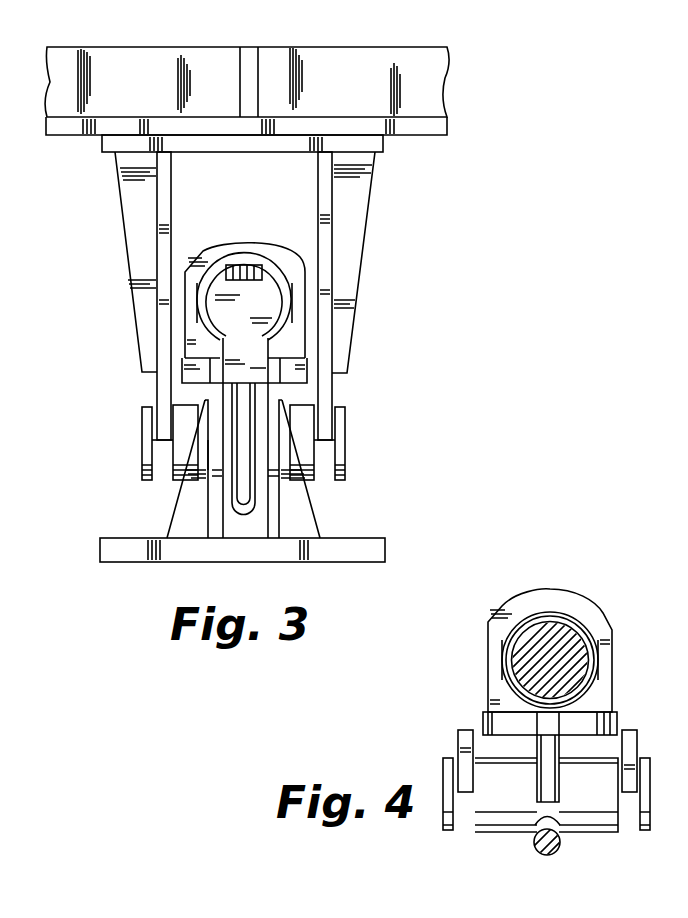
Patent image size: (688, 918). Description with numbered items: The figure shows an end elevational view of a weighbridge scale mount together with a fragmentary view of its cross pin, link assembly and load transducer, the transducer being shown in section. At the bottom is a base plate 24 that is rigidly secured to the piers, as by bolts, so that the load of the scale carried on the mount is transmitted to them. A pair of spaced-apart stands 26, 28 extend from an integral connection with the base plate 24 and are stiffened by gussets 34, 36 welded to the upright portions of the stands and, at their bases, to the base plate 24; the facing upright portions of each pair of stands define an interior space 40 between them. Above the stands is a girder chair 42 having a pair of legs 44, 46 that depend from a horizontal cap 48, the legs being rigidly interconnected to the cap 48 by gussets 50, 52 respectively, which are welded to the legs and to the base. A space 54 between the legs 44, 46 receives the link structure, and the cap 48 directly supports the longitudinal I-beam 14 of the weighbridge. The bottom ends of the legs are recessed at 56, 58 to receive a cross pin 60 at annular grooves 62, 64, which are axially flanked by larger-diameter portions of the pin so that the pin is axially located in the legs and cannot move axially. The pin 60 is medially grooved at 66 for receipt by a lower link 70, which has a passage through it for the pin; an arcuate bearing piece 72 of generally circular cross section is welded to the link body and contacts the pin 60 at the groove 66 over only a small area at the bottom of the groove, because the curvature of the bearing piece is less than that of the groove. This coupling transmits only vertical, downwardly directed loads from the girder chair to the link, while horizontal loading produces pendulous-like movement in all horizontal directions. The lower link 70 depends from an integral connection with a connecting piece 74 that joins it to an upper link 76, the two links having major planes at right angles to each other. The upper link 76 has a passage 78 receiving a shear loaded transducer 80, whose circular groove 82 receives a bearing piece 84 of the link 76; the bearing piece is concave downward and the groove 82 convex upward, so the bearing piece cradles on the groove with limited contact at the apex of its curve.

In FIG. 3, the longitudinal I-beam 14 is at (437, 100).
In FIG. 3, the base plate 24 is at (139, 563).
In FIG. 3, the stand 26 is at (205, 518).
In FIG. 3, the stand 28 is at (305, 522).
In FIG. 3, the gusset 34 is at (183, 497).
In FIG. 3, the gusset 36 is at (306, 500).
In FIG. 3, the interior space 40 is at (245, 460).
In FIG. 3, the girder chair 42 is at (383, 198).
In FIG. 3, the leg 44 is at (172, 191).
In FIG. 4, the leg 44 is at (458, 747).
In FIG. 3, the leg 46 is at (320, 192).
In FIG. 4, the leg 46 is at (637, 750).
In FIG. 3, the horizontal cap 48 is at (383, 150).
In FIG. 3, the gusset 50 is at (128, 222).
In FIG. 3, the gusset 52 is at (360, 235).
In FIG. 3, the space 54 is at (262, 227).
In FIG. 3, the recess 56 is at (156, 407).
In FIG. 3, the recess 58 is at (347, 409).
In FIG. 3, the cross pin 60 is at (346, 440).
In FIG. 3, the annular groove 62 is at (165, 453).
In FIG. 4, the annular groove 62 is at (462, 825).
In FIG. 3, the annular groove 64 is at (320, 463).
In FIG. 4, the annular groove 64 is at (630, 800).
In FIG. 3, the medial groove 66 is at (343, 473).
In FIG. 3, the lower link 70 is at (300, 403).
In FIG. 4, the lower link 70 is at (548, 757).
In FIG. 4, the arcuate bearing piece 72 is at (556, 852).
In FIG. 3, the connecting piece 74 is at (308, 368).
In FIG. 4, the connecting piece 74 is at (614, 720).
In FIG. 3, the upper link 76 is at (218, 256).
In FIG. 4, the upper link 76 is at (495, 620).
In FIG. 3, the passage 78 is at (291, 318).
In FIG. 4, the passage 78 is at (598, 660).
In FIG. 3, the shear loaded transducer 80 is at (220, 310).
In FIG. 4, the shear loaded transducer 80 is at (513, 664).
In FIG. 4, the circular groove 82 is at (590, 671).
In FIG. 4, the bearing piece 84 is at (565, 613).